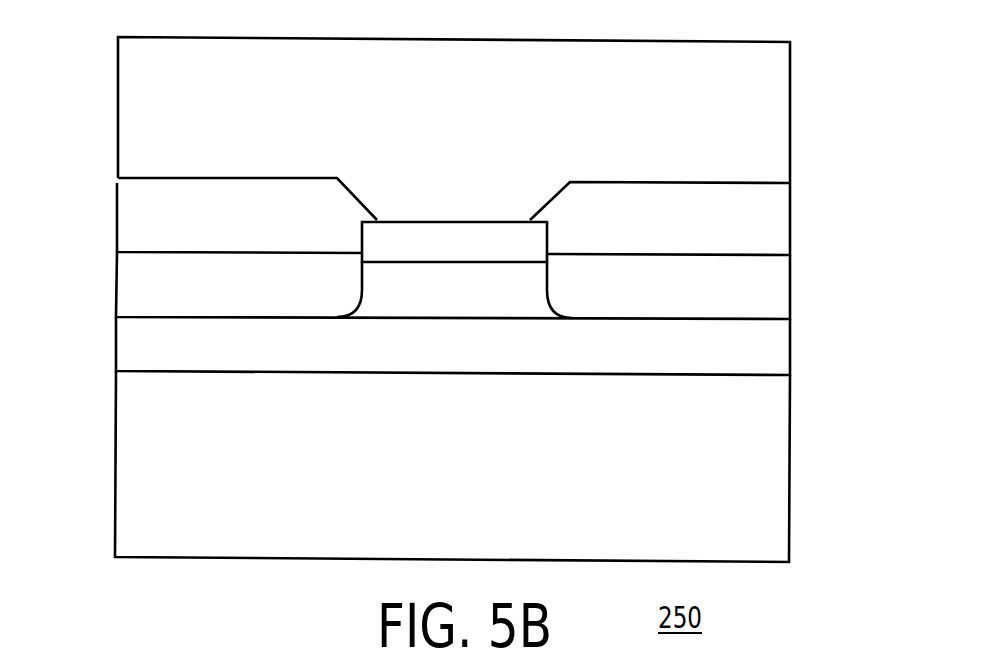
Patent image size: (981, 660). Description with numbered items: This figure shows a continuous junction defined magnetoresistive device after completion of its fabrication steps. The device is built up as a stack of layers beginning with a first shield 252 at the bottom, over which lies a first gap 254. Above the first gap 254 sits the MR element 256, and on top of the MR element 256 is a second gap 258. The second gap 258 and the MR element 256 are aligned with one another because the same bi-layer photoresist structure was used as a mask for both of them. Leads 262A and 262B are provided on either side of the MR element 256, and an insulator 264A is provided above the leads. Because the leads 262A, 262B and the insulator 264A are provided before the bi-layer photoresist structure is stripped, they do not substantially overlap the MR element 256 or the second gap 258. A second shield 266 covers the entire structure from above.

The first shield 252 is at (118, 449).
The first gap 254 is at (118, 354).
The MR element 256 is at (352, 307).
The second gap 258 is at (360, 240).
The lead 262A is at (117, 298).
The lead 262B is at (791, 276).
The insulator 264A is at (118, 193).
The second shield 266 is at (118, 90).